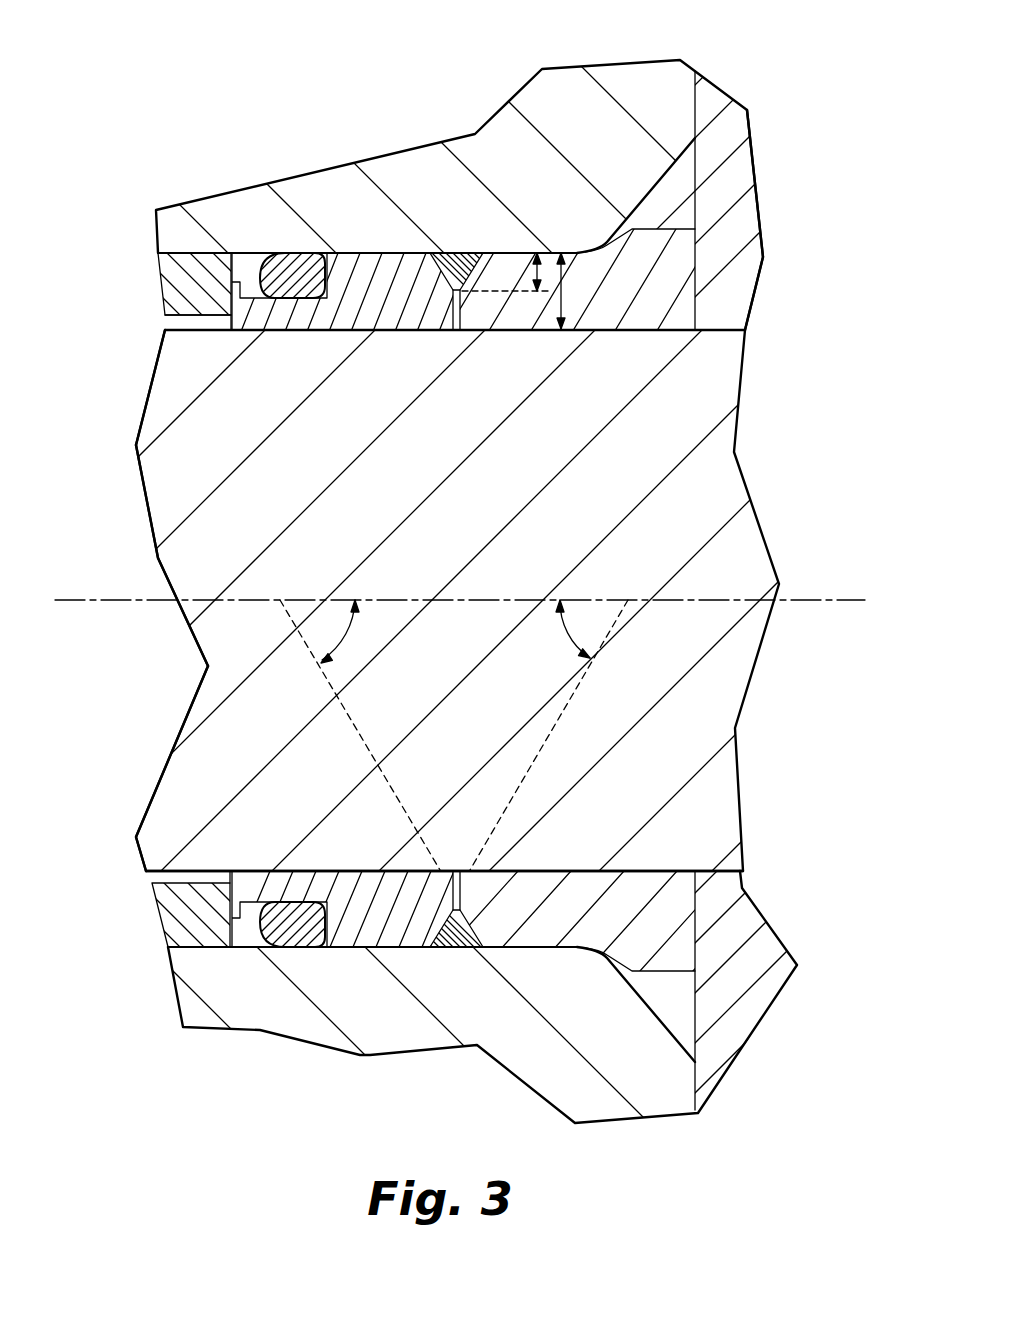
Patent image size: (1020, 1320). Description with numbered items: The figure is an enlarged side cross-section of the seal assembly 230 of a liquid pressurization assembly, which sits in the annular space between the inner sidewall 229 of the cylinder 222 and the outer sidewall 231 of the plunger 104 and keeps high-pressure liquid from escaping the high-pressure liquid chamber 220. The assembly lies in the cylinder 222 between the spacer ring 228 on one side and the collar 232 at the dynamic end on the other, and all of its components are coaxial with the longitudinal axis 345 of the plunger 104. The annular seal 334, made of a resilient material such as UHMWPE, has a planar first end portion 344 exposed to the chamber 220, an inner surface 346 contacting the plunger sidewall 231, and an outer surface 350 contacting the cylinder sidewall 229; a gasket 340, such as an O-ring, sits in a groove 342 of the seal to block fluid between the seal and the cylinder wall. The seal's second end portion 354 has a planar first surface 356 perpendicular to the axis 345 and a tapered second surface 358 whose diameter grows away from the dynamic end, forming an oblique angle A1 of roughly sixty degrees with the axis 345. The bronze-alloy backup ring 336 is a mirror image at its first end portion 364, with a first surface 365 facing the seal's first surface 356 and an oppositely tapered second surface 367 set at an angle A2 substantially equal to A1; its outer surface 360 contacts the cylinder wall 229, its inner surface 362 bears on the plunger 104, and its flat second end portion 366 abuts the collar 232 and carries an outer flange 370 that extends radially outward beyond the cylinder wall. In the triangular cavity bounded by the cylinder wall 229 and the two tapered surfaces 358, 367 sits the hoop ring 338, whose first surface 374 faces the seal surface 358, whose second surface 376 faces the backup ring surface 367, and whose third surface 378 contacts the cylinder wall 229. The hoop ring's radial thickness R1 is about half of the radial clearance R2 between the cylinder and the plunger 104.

The plunger 104 is at (336, 527).
The high-pressure liquid chamber 220 is at (202, 323).
The cylinder 222 is at (260, 212).
The spacer ring 228 is at (182, 265).
The inner sidewall of the cylinder 229 is at (232, 1062).
The seal assembly 230 is at (145, 108).
The outer sidewall of the plunger 231 is at (286, 326).
The collar 232 is at (733, 256).
The annular seal 334 is at (362, 285).
The backup ring 336 is at (618, 275).
The hoop ring 338 is at (486, 252).
The gasket 340 is at (252, 292).
The groove 342 is at (240, 268).
The first end portion of the annular seal 344 is at (228, 296).
The longitudinal axis 345 is at (122, 600).
The inner surface of the annular seal 346 is at (242, 337).
The outer surface of the annular seal 350 is at (196, 976).
The second end portion of the annular seal 354 is at (458, 817).
The first surface of the second end portion 356 is at (480, 322).
The second surface of the second end portion 358 is at (447, 930).
The outer surface of the backup ring 360 is at (547, 948).
The inner surface of the backup ring 362 is at (622, 330).
The first end portion of the backup ring 364 is at (457, 860).
The first surface of the first end portion 365 is at (400, 290).
The second end portion of the backup ring 366 is at (700, 280).
The second surface of the first end portion 367 is at (466, 935).
The outer flange 370 is at (652, 242).
The first surface of the hoop ring 374 is at (436, 268).
The second surface of the hoop ring 376 is at (583, 250).
The third surface of the hoop ring 378 is at (452, 250).
The radial thickness of the hoop ring R1 is at (537, 268).
The radial clearance R2 is at (562, 298).
The angle between the seal's second surface and the longitudinal axis A1 is at (568, 637).
The angle between the backup ring's second surface and the longitudinal axis A2 is at (347, 638).